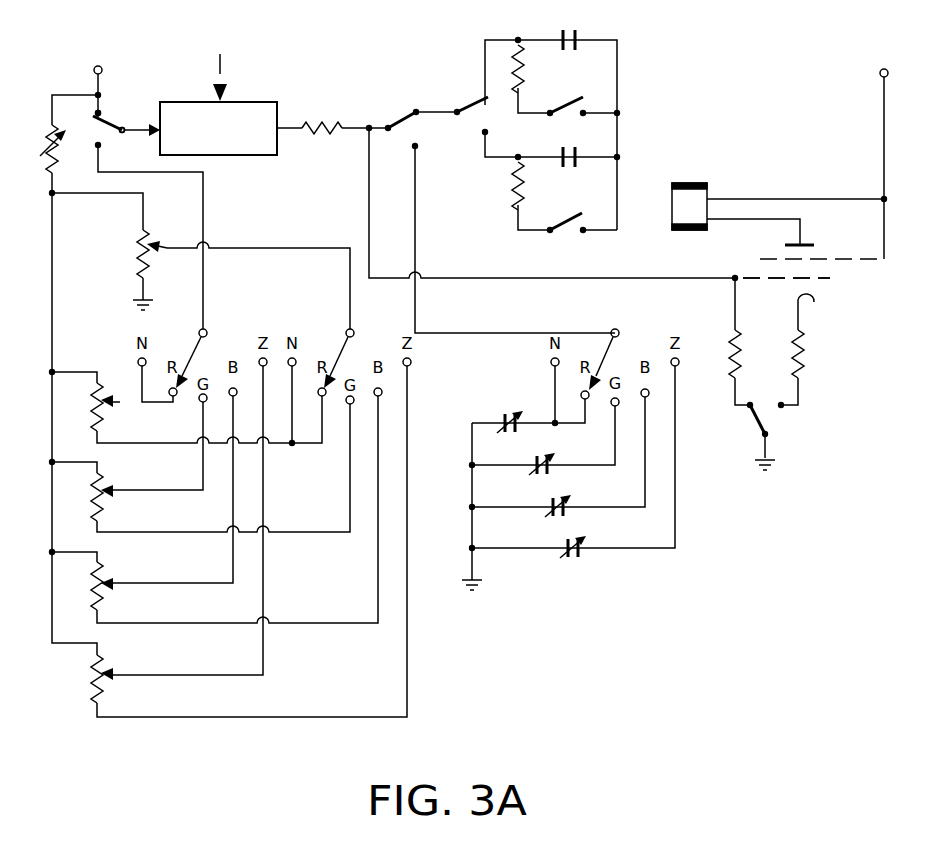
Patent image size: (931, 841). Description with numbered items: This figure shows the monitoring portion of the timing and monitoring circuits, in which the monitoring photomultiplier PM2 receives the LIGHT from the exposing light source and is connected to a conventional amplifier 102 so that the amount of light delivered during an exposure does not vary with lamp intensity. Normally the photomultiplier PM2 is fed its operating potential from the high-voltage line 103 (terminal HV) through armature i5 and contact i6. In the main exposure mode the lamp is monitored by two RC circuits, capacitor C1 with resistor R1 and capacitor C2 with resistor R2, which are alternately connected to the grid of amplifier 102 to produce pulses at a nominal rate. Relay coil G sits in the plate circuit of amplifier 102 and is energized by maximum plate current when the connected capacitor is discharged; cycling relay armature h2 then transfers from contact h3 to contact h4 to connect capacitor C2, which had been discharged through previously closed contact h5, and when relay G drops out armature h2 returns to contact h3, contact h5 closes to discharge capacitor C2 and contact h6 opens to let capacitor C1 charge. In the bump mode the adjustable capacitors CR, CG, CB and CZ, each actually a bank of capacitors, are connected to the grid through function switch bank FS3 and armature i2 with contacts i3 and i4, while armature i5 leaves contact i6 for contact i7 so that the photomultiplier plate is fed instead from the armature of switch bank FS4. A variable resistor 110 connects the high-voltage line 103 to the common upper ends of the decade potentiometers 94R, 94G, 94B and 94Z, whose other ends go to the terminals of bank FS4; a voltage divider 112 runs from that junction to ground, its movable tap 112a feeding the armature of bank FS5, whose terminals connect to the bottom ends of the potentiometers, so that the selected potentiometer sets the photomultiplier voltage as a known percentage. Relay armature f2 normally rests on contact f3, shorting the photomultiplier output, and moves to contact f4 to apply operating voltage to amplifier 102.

The high voltage terminal HV is at (98, 59).
The high-voltage line 103 is at (101, 90).
The contact i6 is at (95, 111).
The armature i5 is at (114, 123).
The contact i7 is at (101, 148).
The variable resistor 110 is at (66, 154).
The monitoring photomultiplier PM2 is at (244, 157).
The light input LIGHT is at (223, 66).
The armature i2 is at (399, 123).
The contact i3 is at (419, 108).
The contact i4 is at (411, 148).
The relay armature h2 is at (474, 116).
The contact h3 is at (483, 96).
The contact h4 is at (484, 138).
The resistor R1 is at (526, 75).
The capacitor C1 is at (578, 34).
The contact h6 is at (573, 117).
The capacitor C2 is at (556, 150).
The resistor R2 is at (509, 200).
The contact h5 is at (572, 234).
The voltage divider 112 is at (140, 262).
The movable tap 112a is at (168, 252).
The function switch bank FS4 is at (199, 343).
The function switch bank FS5 is at (342, 351).
The function switch bank FS3 is at (610, 358).
The decade potentiometer 94R is at (105, 412).
The decade potentiometer 94G is at (105, 504).
The decade potentiometer 94B is at (105, 596).
The decade potentiometer 94Z is at (105, 689).
The adjustable capacitor CR is at (503, 418).
The adjustable capacitor CG is at (556, 461).
The adjustable capacitor CB is at (571, 503).
The adjustable capacitor CZ is at (587, 544).
The relay coil G is at (689, 206).
The amplifier 102 is at (826, 286).
The contact f3 is at (751, 401).
The armature f2 is at (756, 420).
The contact f4 is at (781, 412).